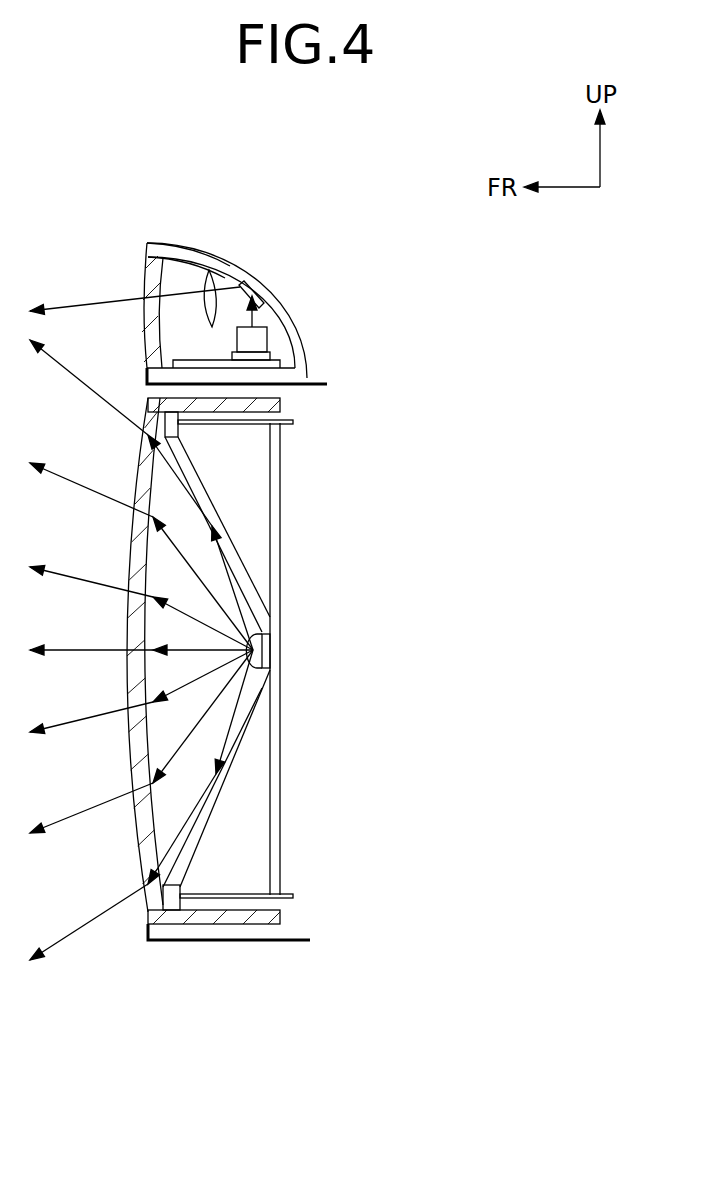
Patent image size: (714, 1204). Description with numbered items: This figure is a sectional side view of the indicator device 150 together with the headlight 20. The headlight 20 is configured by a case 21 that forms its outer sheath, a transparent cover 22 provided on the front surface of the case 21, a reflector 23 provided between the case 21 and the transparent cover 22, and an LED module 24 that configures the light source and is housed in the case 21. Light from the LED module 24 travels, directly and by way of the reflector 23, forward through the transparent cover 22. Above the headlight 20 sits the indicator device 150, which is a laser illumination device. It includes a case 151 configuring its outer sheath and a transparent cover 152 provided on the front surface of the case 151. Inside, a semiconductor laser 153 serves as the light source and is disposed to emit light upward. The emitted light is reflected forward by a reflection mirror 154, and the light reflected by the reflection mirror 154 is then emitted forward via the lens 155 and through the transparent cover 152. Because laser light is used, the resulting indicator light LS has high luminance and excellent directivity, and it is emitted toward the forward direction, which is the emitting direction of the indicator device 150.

The headlight 20 is at (205, 949).
The case 21 is at (288, 943).
The transparent cover 22 is at (145, 903).
The reflector 23 is at (223, 515).
The LED module 24 is at (271, 650).
The indicator device 150 is at (312, 326).
The case 151 is at (163, 241).
The transparent cover 152 is at (140, 277).
The semiconductor laser 153 is at (256, 340).
The reflection mirror 154 is at (251, 287).
The lens 155 is at (202, 280).
The indicator light LS is at (80, 303).